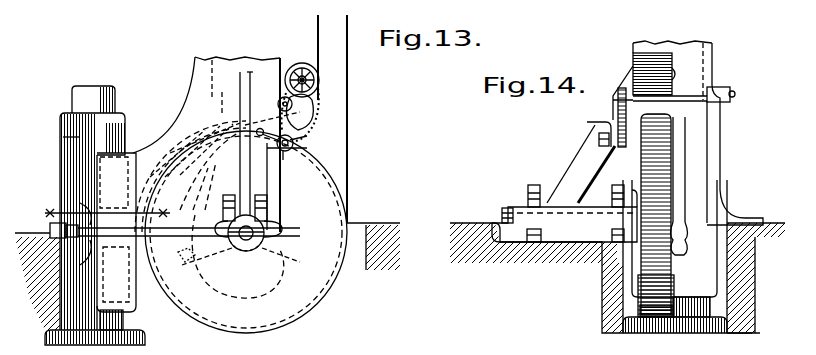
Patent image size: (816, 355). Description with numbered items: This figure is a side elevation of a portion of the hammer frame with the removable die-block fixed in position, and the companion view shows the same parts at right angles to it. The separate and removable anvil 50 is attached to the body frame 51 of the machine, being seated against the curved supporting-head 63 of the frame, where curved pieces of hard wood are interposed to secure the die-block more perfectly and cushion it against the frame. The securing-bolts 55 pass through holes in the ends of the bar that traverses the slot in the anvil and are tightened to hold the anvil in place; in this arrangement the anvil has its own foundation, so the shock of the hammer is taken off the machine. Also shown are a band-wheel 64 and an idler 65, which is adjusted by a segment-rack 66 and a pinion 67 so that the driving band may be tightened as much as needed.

In FIG. 13, the anvil 50 is at (60, 144).
In FIG. 14, the anvil 50 is at (697, 302).
In FIG. 13, the body frame 51 is at (216, 133).
In FIG. 14, the body frame 51 is at (722, 66).
In FIG. 13, the securing-bolts 55 is at (157, 223).
In FIG. 13, the curved supporting-head 63 is at (124, 160).
In FIG. 13, the band-wheel 64 is at (330, 196).
In FIG. 14, the band-wheel 64 is at (672, 168).
In FIG. 13, the idler 65 is at (298, 75).
In FIG. 14, the idler 65 is at (633, 52).
In FIG. 13, the segment-rack 66 is at (310, 125).
In FIG. 14, the segment-rack 66 is at (618, 108).
In FIG. 13, the pinion 67 is at (287, 152).
In FIG. 14, the pinion 67 is at (603, 152).